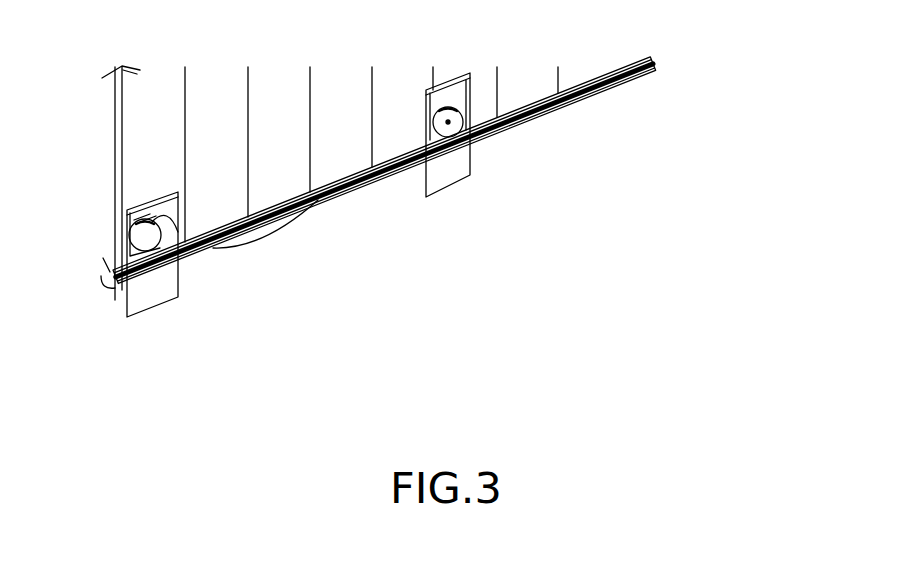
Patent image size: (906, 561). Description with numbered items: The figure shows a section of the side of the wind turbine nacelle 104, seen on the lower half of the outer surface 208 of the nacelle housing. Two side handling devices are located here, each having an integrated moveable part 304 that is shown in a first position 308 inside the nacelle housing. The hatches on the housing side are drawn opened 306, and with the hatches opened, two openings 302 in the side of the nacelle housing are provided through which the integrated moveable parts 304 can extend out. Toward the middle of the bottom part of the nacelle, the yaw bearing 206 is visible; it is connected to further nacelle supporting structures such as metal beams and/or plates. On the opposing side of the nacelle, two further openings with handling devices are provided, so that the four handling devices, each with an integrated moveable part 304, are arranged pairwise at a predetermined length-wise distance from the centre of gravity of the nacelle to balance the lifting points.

The wind turbine nacelle 104 is at (648, 84).
The yaw bearing 206 is at (268, 237).
The outer surface 208 is at (477, 78).
The openings 302 is at (148, 203).
The integrated moveable part 304 is at (178, 257).
The opened hatches 306 is at (457, 187).
The first position 308 is at (447, 126).